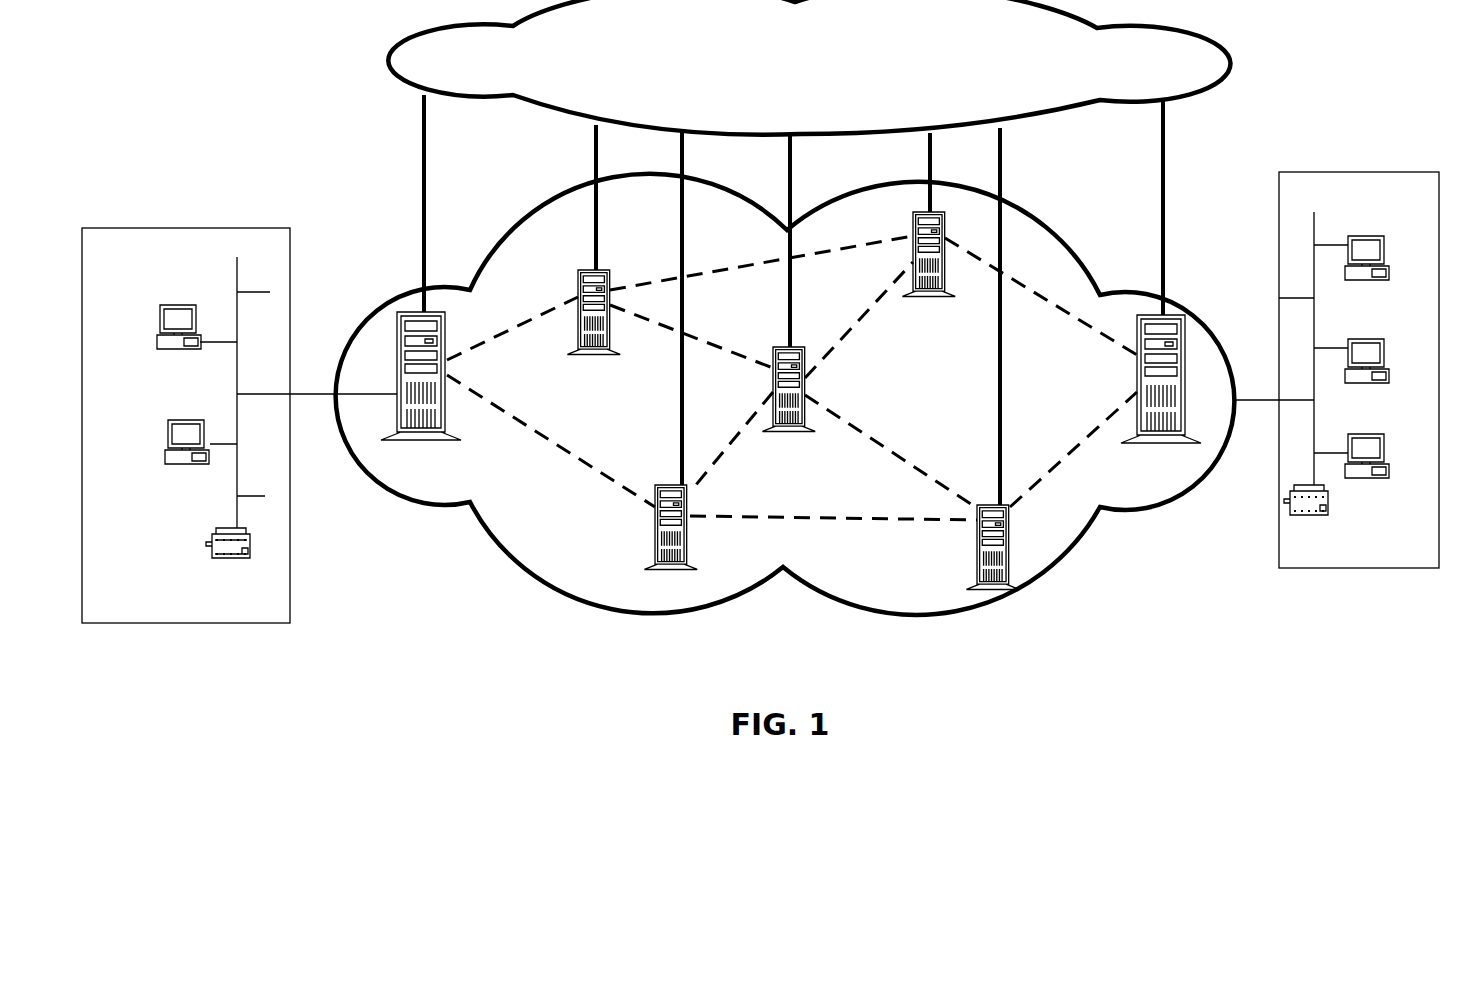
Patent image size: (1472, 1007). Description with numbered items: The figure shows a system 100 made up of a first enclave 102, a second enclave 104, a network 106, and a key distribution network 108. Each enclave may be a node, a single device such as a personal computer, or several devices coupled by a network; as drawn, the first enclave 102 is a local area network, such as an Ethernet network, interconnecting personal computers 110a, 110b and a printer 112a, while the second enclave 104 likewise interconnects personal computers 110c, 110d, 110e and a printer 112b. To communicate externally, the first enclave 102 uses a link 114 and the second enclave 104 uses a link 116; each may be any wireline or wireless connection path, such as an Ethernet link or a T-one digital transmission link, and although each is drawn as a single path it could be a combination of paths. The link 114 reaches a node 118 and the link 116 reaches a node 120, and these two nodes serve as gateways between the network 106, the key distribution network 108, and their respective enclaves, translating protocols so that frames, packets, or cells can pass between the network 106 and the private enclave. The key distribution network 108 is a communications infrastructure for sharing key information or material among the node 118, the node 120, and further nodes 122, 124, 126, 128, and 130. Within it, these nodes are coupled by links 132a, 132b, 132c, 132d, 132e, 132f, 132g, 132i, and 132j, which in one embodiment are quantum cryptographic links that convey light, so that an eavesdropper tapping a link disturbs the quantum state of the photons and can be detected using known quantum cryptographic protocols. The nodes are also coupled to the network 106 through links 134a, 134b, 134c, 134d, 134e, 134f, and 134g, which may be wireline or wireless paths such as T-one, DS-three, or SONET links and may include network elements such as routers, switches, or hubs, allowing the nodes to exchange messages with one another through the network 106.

The system 100 is at (1122, 681).
The first enclave 102 is at (152, 218).
The second enclave 104 is at (1377, 164).
The network 106 is at (787, 78).
The key distribution network 108 is at (547, 569).
The personal computer 110a is at (152, 317).
The personal computer 110b is at (160, 441).
The personal computer 110c is at (1392, 248).
The personal computer 110d is at (1391, 350).
The personal computer 110e is at (1391, 449).
The printer 112a is at (230, 569).
The printer 112b is at (1320, 520).
The link 114 is at (306, 416).
The link 116 is at (1261, 416).
The node 118 is at (421, 390).
The node 120 is at (1161, 397).
The node 122 is at (593, 328).
The node 124 is at (928, 270).
The node 126 is at (788, 405).
The node 128 is at (670, 539).
The node 130 is at (974, 547).
The link 132a is at (512, 327).
The link 132b is at (551, 441).
The link 132c is at (761, 263).
The link 132d is at (691, 336).
The link 132e is at (859, 320).
The link 132f is at (891, 451).
The link 132g is at (1041, 296).
The link 132i is at (833, 533).
The link 132j is at (731, 442).
The link 134a is at (396, 203).
The link 134b is at (1196, 207).
The link 134c is at (564, 197).
The link 134d is at (898, 172).
The link 134e is at (818, 240).
The link 134f is at (710, 308).
The link 134g is at (1030, 316).